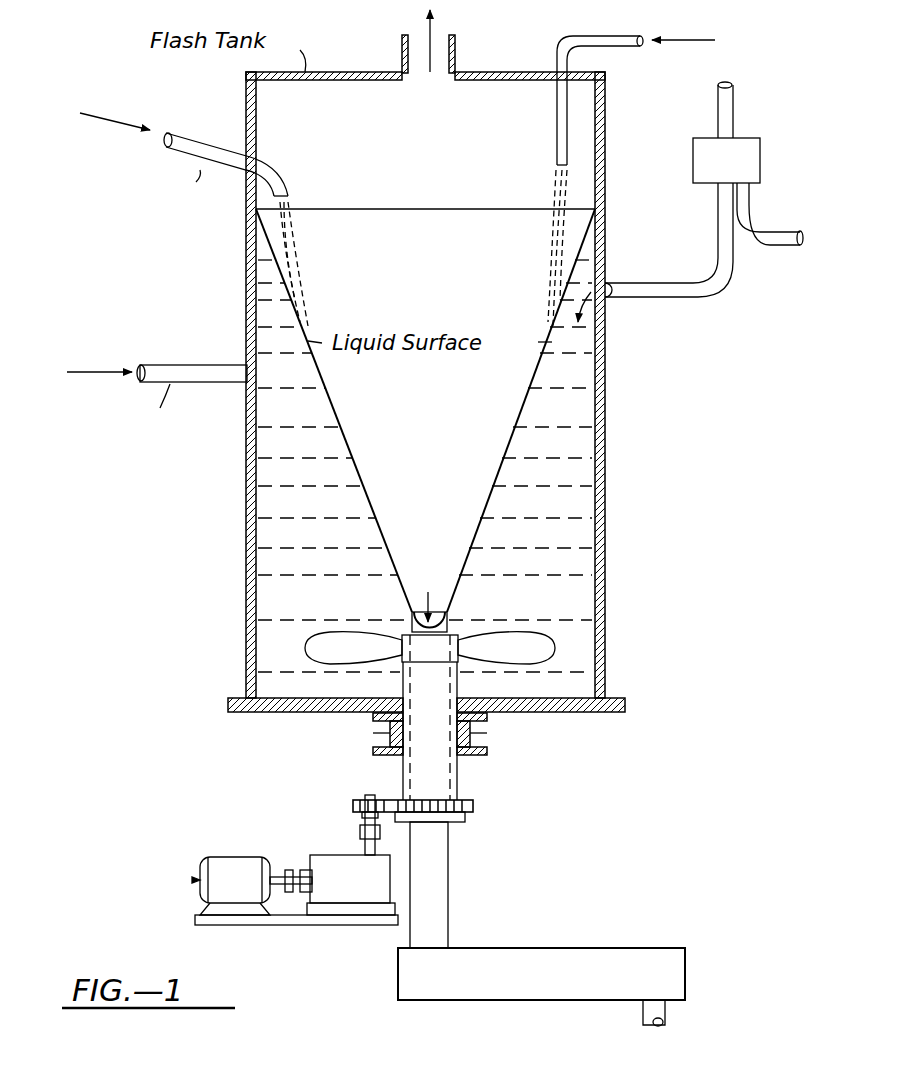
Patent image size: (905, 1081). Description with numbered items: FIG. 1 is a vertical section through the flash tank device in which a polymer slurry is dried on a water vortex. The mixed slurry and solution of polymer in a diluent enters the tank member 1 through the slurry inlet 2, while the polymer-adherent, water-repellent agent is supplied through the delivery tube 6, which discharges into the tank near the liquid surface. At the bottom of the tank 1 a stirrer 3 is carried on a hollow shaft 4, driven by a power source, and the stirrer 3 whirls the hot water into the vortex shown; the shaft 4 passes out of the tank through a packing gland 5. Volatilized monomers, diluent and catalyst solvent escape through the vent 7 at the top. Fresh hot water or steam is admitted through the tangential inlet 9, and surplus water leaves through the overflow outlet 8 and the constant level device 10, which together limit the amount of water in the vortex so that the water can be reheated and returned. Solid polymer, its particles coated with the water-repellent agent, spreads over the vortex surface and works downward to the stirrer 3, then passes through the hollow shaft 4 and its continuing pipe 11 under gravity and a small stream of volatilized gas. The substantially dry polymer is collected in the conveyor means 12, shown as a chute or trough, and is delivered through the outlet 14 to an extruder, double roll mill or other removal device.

The tank member 1 is at (606, 115).
The slurry inlet 2 is at (201, 132).
The stirrer 3 is at (385, 642).
The hollow shaft 4 is at (408, 675).
The packing gland 5 is at (380, 735).
The delivery tube 6 is at (557, 62).
The vent 7 is at (432, 40).
The overflow outlet 8 is at (716, 276).
The tangential inlet 9 is at (182, 360).
The constant level device 10 is at (728, 112).
The pipe 11 is at (443, 866).
The conveyor means 12 is at (520, 956).
The outlet 14 is at (665, 1013).